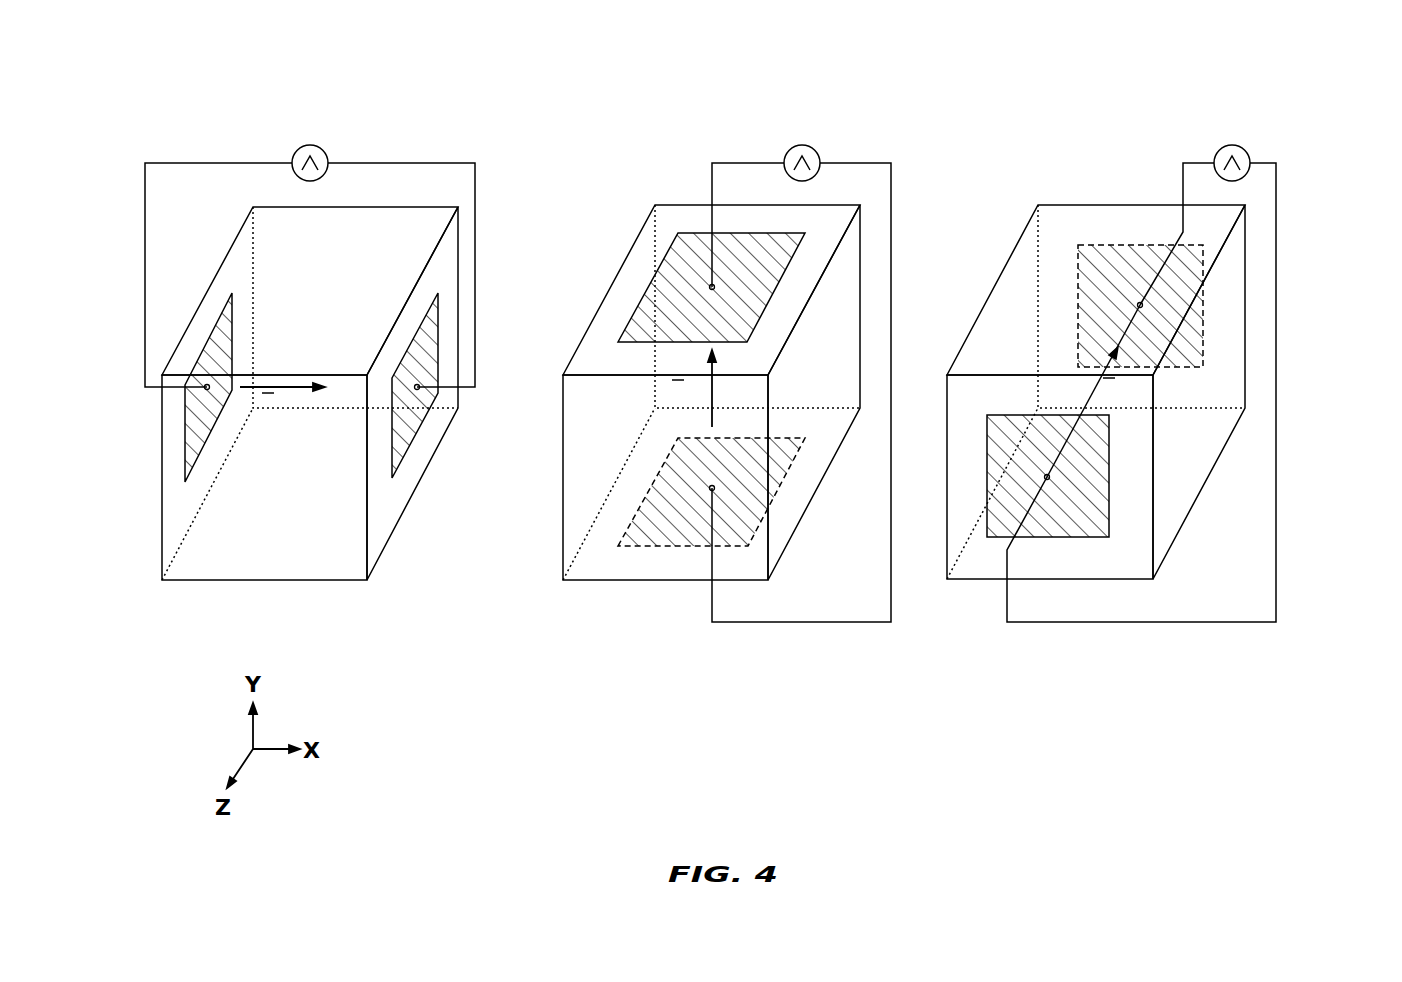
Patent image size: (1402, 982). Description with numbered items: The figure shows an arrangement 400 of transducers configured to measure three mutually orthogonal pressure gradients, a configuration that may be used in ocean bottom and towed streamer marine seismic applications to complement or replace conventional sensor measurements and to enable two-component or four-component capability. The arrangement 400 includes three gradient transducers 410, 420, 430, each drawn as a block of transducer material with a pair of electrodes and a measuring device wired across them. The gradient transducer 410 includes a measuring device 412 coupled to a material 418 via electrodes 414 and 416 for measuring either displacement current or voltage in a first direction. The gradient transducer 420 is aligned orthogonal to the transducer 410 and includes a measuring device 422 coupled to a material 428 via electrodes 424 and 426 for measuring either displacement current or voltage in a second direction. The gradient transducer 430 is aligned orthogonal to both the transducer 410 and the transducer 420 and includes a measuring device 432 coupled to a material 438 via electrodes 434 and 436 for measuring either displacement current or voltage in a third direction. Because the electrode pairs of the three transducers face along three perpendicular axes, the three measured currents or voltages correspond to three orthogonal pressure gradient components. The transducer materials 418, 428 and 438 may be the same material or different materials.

The arrangement of transducers 400 is at (175, 72).
The gradient transducer 410 is at (205, 617).
The measuring device 412 is at (312, 145).
The electrode 414 is at (410, 432).
The electrode 416 is at (185, 430).
The material 418 is at (325, 582).
The gradient transducer 420 is at (653, 617).
The measuring device 422 is at (805, 145).
The electrode 424 is at (678, 275).
The electrode 426 is at (782, 473).
The material 428 is at (563, 512).
The gradient transducer 430 is at (1017, 635).
The measuring device 432 is at (1237, 145).
The electrode 434 is at (1202, 320).
The electrode 436 is at (1110, 500).
The material 438 is at (1015, 248).